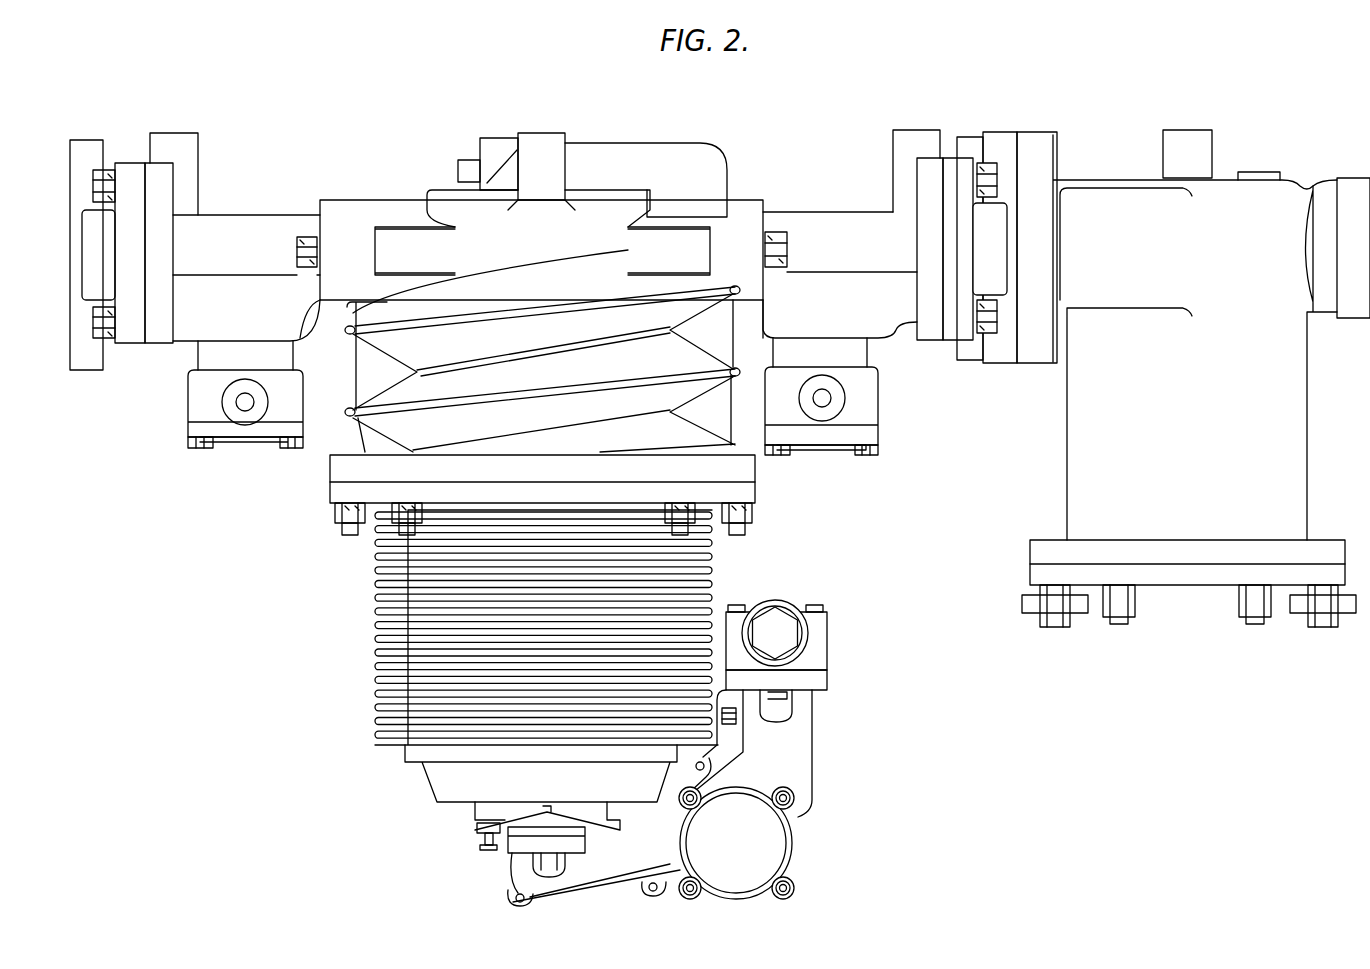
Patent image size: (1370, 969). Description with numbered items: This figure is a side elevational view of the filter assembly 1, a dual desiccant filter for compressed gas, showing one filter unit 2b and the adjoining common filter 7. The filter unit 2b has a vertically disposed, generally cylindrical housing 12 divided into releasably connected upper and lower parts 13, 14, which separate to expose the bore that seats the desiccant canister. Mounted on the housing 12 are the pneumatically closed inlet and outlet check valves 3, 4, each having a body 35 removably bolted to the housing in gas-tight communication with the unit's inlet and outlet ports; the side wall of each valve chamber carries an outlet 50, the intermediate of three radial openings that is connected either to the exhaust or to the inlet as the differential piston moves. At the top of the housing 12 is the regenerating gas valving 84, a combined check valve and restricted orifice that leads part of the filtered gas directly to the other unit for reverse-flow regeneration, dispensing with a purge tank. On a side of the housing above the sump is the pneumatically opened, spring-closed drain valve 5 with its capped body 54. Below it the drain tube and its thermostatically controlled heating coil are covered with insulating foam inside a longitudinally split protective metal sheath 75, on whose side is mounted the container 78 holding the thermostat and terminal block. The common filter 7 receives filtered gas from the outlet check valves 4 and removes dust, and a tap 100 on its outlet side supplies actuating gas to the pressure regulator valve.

The filter assembly 1 is at (541, 206).
The filter unit 2b is at (584, 495).
The inlet check valve 3 is at (213, 410).
The outlet check valve 4 is at (841, 411).
The drain valve 5 is at (810, 642).
The common filter 7 is at (1310, 420).
The housing 12 is at (501, 366).
The upper part 13 is at (355, 368).
The lower part 14 is at (375, 605).
The valve body 35 is at (253, 215).
The outlet 50 is at (250, 402).
The body 54 is at (828, 655).
The protective metal sheath 75 is at (815, 740).
The container 78 is at (795, 845).
The regenerating gas valving 84 is at (445, 144).
The tap 100 is at (1250, 172).